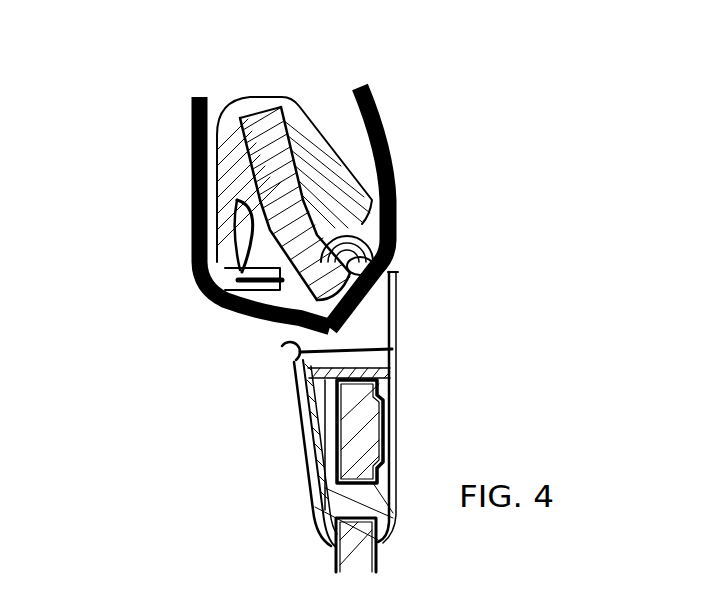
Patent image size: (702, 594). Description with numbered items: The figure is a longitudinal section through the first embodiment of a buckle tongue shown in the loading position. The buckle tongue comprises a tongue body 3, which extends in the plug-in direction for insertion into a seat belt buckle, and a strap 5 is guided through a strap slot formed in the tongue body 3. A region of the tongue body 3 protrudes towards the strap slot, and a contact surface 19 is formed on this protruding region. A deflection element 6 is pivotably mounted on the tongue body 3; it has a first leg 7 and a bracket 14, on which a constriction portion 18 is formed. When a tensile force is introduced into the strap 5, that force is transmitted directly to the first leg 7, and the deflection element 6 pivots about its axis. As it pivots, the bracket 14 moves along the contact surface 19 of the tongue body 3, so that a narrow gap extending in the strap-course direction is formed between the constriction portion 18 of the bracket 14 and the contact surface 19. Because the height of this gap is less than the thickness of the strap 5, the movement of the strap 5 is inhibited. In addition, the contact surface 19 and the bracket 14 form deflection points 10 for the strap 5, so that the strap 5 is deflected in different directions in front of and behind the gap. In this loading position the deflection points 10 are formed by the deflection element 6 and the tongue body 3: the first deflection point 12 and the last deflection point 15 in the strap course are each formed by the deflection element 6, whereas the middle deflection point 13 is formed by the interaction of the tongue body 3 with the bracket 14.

The tongue body 3 is at (292, 103).
The strap 5 is at (370, 97).
The deflection element 6 is at (240, 297).
The first leg 7 is at (238, 241).
The deflection points 10 is at (298, 306).
The first deflection point 12 is at (380, 264).
The middle deflection point 13 is at (322, 325).
The bracket 14 is at (303, 343).
The last deflection point 15 is at (243, 288).
The constriction portion 18 is at (304, 362).
The contact surface 19 is at (312, 298).